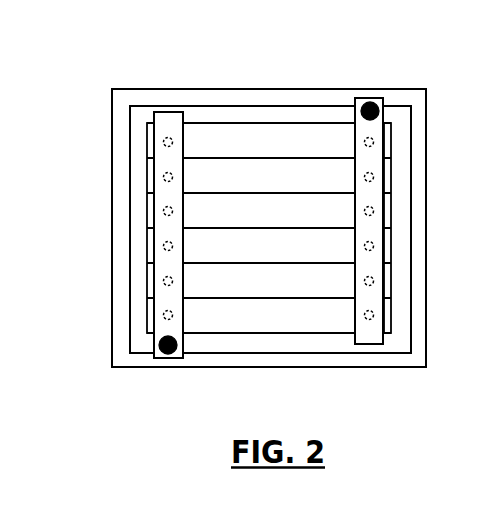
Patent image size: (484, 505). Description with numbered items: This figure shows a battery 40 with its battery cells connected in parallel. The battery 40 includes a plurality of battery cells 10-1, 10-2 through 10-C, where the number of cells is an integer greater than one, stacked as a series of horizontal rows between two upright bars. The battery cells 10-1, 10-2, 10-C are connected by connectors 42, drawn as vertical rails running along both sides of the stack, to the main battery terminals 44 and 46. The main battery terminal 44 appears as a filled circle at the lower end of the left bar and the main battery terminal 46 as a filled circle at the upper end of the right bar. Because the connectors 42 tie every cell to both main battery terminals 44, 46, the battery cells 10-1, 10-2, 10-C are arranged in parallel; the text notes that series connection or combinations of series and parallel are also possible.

The battery 40 is at (245, 189).
The battery cell 10-1 is at (147, 141).
The battery cell 10-2 is at (147, 179).
The battery cell 10-C is at (147, 311).
The connector 42 is at (153, 237).
The main battery terminal 44 is at (159, 345).
The main battery terminal 46 is at (381, 113).